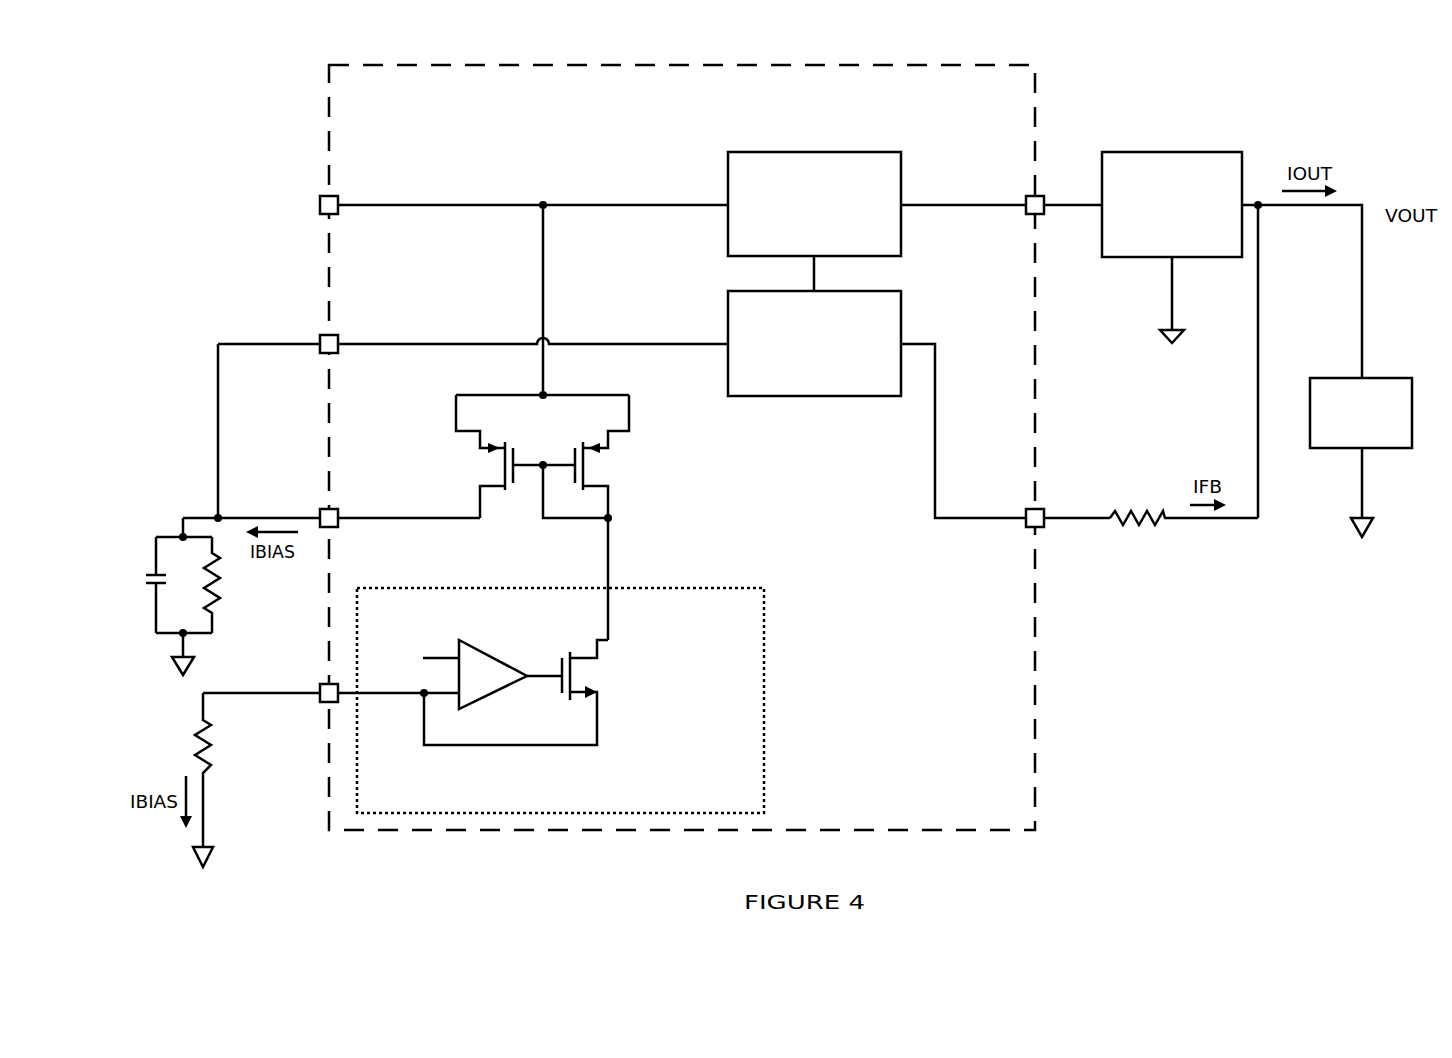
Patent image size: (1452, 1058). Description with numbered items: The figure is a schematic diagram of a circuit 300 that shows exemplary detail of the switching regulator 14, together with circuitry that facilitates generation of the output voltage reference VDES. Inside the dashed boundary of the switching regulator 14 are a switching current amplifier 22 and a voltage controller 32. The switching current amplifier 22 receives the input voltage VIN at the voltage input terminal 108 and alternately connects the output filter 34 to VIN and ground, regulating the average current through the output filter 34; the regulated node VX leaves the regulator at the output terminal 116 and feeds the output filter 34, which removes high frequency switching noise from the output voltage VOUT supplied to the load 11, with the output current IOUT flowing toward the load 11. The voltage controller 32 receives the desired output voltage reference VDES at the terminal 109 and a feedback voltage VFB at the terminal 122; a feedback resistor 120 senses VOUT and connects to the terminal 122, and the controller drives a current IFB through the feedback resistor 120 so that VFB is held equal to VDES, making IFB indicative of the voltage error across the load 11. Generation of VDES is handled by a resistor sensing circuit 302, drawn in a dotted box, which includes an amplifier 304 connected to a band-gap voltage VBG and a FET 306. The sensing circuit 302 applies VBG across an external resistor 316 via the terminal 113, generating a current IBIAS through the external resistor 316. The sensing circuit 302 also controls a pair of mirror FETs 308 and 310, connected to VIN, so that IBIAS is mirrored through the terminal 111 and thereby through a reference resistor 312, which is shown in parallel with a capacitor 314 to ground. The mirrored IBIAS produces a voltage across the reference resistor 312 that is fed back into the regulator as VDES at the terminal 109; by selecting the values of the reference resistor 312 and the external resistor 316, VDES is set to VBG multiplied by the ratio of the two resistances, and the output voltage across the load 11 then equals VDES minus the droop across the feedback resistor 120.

The circuit 300 is at (1322, 56).
The switching regulator 14 is at (682, 447).
The switching current amplifier 22 is at (814, 204).
The voltage controller 32 is at (814, 326).
The output filter 34 is at (1172, 247).
The load 11 is at (1412, 425).
The voltage input terminal 108 is at (338, 199).
The terminal 109 is at (338, 338).
The terminal 111 is at (338, 512).
The terminal 113 is at (323, 703).
The output terminal 116 is at (1026, 196).
The feedback resistor 120 is at (1142, 490).
The terminal 122 is at (1026, 511).
The resistor sensing circuit 302 is at (560, 700).
The amplifier 304 is at (500, 661).
The FET 306 is at (604, 673).
The FET 308 is at (472, 465).
The FET 310 is at (624, 464).
The reference resistor 312 is at (229, 588).
The capacitor 314 is at (133, 575).
The external resistor 316 is at (176, 745).